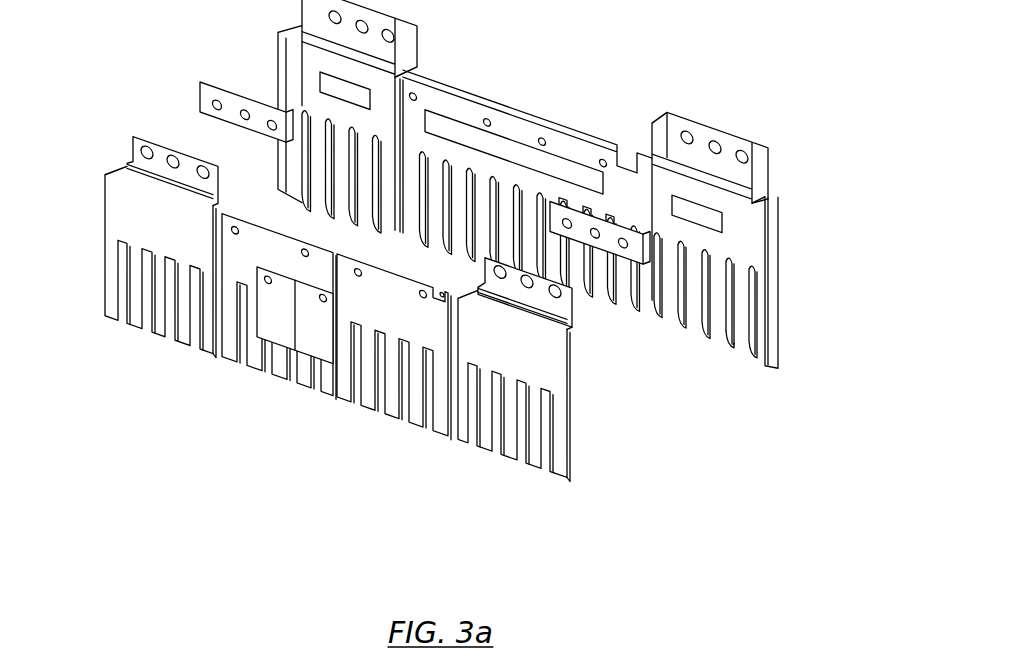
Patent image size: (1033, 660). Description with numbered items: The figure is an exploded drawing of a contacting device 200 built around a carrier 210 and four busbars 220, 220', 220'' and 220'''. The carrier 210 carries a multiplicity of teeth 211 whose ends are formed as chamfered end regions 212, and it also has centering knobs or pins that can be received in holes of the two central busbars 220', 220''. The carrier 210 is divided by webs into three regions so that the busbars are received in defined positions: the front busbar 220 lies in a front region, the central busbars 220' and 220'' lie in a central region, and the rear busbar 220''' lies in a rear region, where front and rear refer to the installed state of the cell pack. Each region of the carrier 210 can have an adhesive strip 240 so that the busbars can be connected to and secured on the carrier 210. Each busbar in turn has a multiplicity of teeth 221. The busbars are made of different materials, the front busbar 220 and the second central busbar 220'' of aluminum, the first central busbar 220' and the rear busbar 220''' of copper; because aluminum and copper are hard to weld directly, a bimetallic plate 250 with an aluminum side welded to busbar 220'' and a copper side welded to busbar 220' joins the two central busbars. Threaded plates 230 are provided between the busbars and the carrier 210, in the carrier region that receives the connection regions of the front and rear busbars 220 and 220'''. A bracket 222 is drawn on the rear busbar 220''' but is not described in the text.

The contacting device 200 is at (733, 469).
The carrier 210 is at (572, 97).
The teeth 211 is at (853, 333).
The chamfered end regions 212 is at (853, 375).
The front busbar 220 is at (505, 403).
The central busbar 220' is at (385, 373).
The central busbar 220'' is at (255, 331).
The rear busbar 220''' is at (153, 278).
The teeth 221 is at (664, 484).
The plate bracket 222 is at (75, 140).
The threaded plate 230 is at (111, 81).
The adhesive strip 240 is at (731, 100).
The bimetallic plate 250 is at (270, 438).